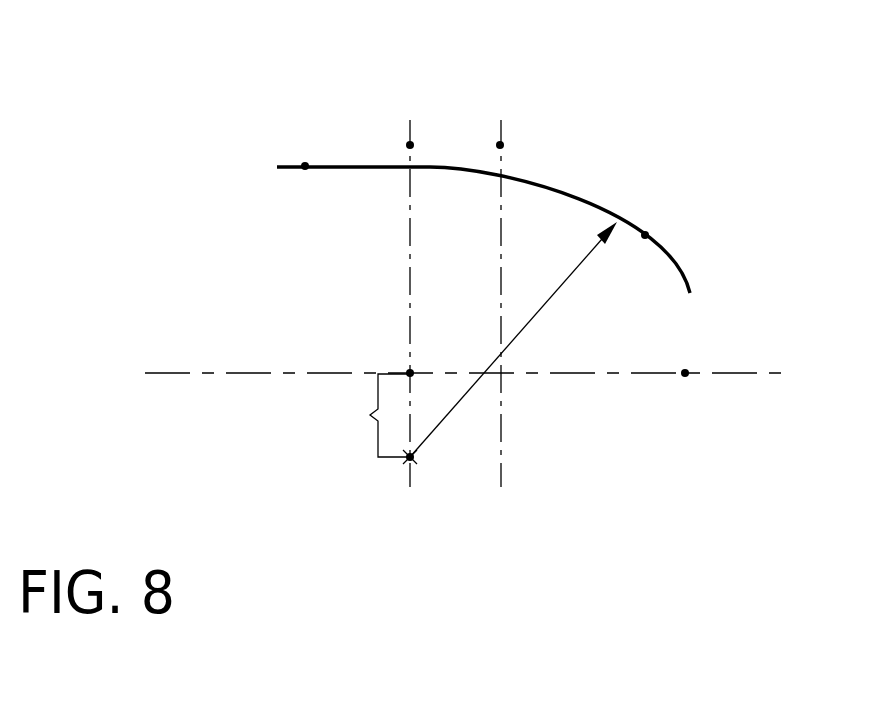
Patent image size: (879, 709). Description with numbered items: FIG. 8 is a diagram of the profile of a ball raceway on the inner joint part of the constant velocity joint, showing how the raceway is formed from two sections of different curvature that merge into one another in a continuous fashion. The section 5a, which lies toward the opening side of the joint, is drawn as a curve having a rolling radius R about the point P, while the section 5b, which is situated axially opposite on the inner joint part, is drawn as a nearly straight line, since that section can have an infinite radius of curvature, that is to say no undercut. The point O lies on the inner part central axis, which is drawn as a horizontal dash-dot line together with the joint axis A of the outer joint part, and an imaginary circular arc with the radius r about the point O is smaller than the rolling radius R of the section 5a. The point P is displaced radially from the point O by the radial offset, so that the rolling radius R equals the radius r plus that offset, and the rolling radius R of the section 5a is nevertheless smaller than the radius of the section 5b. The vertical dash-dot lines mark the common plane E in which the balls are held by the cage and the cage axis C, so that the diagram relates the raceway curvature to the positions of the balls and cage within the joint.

The raceway section toward the opening side 5a is at (645, 235).
The axially opposite raceway section 5b is at (305, 166).
The common plane of the balls E is at (410, 145).
The cage axis C is at (502, 143).
The joint axis of the outer joint part A is at (685, 373).
The point on the inner part central axis O is at (408, 372).
The center of the rolling radius P is at (413, 460).
The rolling radius R is at (513, 339).
The radius of the imaginary circular arc r is at (395, 270).